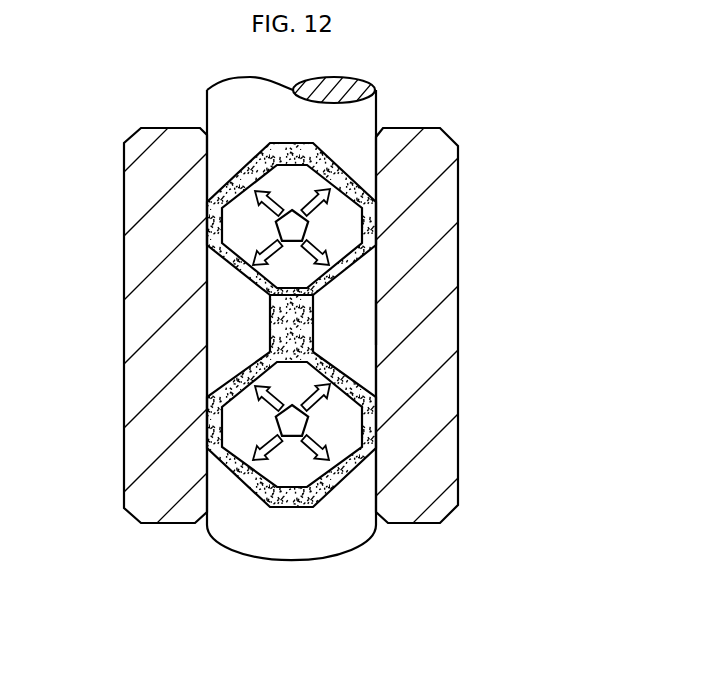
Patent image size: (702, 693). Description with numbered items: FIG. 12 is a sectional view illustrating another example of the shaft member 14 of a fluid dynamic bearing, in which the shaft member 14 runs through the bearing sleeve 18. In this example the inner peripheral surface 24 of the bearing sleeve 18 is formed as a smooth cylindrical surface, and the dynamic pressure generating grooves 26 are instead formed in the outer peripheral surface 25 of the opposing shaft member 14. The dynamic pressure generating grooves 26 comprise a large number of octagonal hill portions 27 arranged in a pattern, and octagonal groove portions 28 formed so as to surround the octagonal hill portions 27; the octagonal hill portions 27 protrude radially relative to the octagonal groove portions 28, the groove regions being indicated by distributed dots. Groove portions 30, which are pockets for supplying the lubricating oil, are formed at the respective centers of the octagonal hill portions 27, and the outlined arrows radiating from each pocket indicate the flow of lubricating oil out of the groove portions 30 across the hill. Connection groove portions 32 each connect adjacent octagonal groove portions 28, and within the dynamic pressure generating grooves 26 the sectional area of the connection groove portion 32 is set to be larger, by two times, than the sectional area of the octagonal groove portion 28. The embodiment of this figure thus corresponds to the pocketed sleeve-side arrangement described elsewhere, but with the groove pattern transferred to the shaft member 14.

The shaft member 14 is at (391, 109).
The bearing sleeve 18 is at (487, 227).
The inner peripheral surface 24 is at (377, 318).
The outer peripheral surface 25 is at (216, 428).
The dynamic pressure generating grooves 26 is at (291, 497).
The octagonal hill portion 27 is at (308, 464).
The octagonal groove portion 28 is at (247, 487).
The groove portion (pocket) 30 is at (285, 229).
The connection groove portion 32 is at (287, 321).